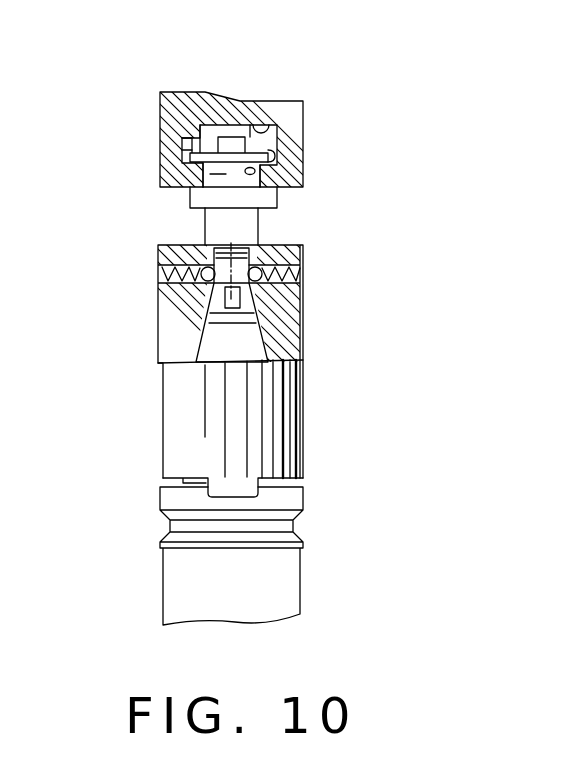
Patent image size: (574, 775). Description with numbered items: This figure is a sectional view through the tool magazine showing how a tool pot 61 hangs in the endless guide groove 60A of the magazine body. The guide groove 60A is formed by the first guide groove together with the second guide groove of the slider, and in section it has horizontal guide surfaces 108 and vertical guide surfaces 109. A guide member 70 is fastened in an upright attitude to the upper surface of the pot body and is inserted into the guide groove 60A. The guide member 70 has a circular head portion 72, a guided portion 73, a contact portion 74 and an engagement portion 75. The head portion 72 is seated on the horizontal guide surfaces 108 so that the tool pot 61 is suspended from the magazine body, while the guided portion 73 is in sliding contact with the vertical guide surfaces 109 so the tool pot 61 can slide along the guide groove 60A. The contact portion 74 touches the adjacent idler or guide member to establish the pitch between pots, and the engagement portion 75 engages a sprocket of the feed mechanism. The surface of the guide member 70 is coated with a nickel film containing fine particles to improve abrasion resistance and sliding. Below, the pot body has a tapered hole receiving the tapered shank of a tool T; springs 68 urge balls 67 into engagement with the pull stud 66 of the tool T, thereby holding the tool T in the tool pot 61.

The endless guide groove 60A is at (250, 113).
The guide member 70 is at (213, 123).
The head portion 72 is at (190, 138).
The guided portion 73 is at (217, 174).
The contact portion 74 is at (190, 203).
The engagement portion 75 is at (204, 220).
The horizontal guide surfaces 108 is at (272, 152).
The vertical guide surfaces 109 is at (255, 172).
The pull stud 66 is at (238, 250).
The spring 68 is at (297, 270).
The ball 67 is at (297, 308).
The tool pot 61 is at (303, 413).
The tool T is at (302, 563).